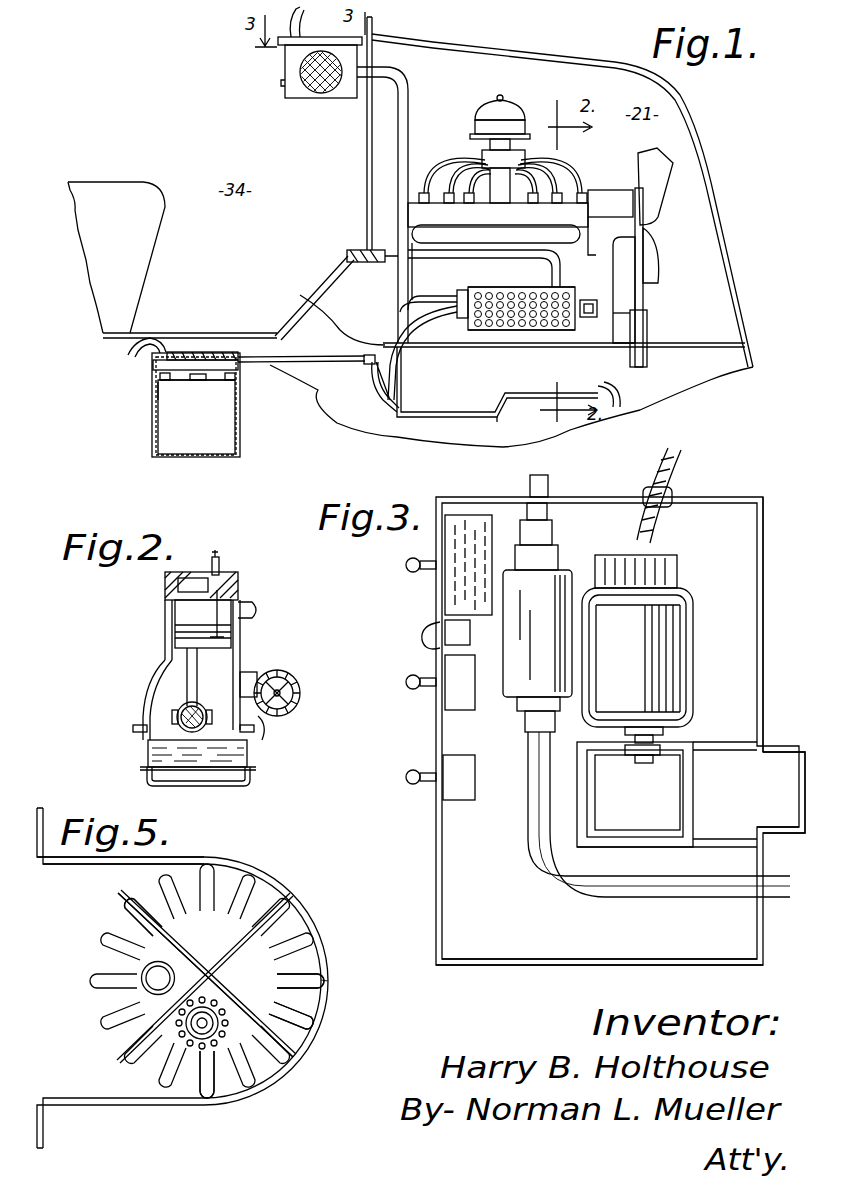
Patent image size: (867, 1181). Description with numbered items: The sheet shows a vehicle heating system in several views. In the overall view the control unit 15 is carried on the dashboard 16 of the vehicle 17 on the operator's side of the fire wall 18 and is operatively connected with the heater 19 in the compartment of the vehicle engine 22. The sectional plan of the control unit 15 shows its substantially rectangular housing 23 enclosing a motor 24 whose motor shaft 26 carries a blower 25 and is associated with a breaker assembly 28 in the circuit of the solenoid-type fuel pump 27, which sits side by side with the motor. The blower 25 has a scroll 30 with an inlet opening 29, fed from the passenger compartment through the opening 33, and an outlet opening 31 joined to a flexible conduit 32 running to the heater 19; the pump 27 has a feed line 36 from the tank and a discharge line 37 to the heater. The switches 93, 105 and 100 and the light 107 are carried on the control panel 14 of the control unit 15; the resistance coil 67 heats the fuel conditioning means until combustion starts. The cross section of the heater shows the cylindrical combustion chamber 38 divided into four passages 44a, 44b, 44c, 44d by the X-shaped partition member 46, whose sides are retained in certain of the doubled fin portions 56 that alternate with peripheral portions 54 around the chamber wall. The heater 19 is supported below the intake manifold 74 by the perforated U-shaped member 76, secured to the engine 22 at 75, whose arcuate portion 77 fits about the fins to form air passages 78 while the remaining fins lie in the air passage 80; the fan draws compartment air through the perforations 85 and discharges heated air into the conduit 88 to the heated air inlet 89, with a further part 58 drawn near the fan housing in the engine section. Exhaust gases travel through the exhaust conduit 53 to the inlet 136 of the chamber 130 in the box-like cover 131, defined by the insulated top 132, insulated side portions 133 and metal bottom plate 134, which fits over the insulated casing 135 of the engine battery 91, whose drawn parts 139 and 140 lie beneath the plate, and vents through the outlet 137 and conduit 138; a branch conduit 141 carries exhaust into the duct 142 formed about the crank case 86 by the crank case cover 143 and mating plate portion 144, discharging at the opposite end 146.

In FIG. 3, the control panel 14 is at (440, 852).
In FIG. 1, the control unit 15 is at (298, 92).
In FIG. 3, the control unit 15 is at (435, 930).
In FIG. 1, the dashboard 16 is at (301, 20).
In FIG. 1, the vehicle 17 is at (460, 38).
In FIG. 1, the fire wall 18 is at (365, 170).
In FIG. 1, the heater 19 is at (535, 332).
In FIG. 1, the vehicle engine 22 is at (598, 190).
In FIG. 2, the vehicle engine 22 is at (243, 645).
In FIG. 3, the housing 23 is at (764, 560).
In FIG. 3, the motor 24 is at (696, 665).
In FIG. 3, the blower 25 is at (685, 795).
In FIG. 3, the motor shaft 26 is at (668, 738).
In FIG. 3, the fuel pump 27 is at (508, 700).
In FIG. 3, the breaker assembly 28 is at (668, 565).
In FIG. 3, the inlet opening 29 is at (640, 848).
In FIG. 3, the scroll 30 is at (705, 848).
In FIG. 3, the outlet opening 31 is at (782, 748).
In FIG. 1, the flexible conduit 32 is at (409, 113).
In FIG. 3, the flexible conduit 32 is at (785, 835).
In FIG. 1, the opening 33 is at (321, 93).
In FIG. 3, the opening 33 is at (648, 958).
In FIG. 3, the feed line 36 is at (550, 488).
In FIG. 3, the discharge line 37 is at (553, 886).
In FIG. 5, the combustion chamber 38 is at (268, 963).
In FIG. 5, the passage 44a is at (190, 1055).
In FIG. 5, the passage 44b is at (268, 995).
In FIG. 5, the passage 44c is at (155, 934).
In FIG. 5, the passage 44d is at (132, 968).
In FIG. 5, the partition member 46 is at (242, 938).
In FIG. 1, the exhaust conduit 53 is at (425, 333).
In FIG. 5, the peripheral portions 54 is at (320, 984).
In FIG. 5, the fin portions 56 is at (322, 962).
In FIG. 2, the fan outlet 58 is at (290, 730).
In FIG. 1, the resistance coil 67 is at (588, 298).
In FIG. 1, the intake manifold 74 is at (530, 233).
In FIG. 1, the securing point 75 is at (514, 287).
In FIG. 2, the securing point 75 is at (240, 674).
In FIG. 2, the U-shaped member 76 is at (266, 672).
In FIG. 5, the U-shaped member 76 is at (190, 863).
In FIG. 2, the arcuate portion 77 is at (307, 694).
In FIG. 5, the arcuate portion 77 is at (275, 968).
In FIG. 2, the air passages 78 is at (294, 685).
In FIG. 5, the air passages 78 is at (257, 892).
In FIG. 2, the air passage 80 is at (250, 672).
In FIG. 5, the perforations 85 is at (232, 1105).
In FIG. 1, the crank case 86 is at (500, 412).
In FIG. 1, the conduit 88 is at (448, 259).
In FIG. 1, the heated air inlet 89 is at (348, 249).
In FIG. 1, the engine battery 91 is at (203, 445).
In FIG. 3, the switch 93 is at (423, 792).
In FIG. 3, the switch 100 is at (422, 690).
In FIG. 3, the switch 105 is at (420, 575).
In FIG. 3, the light 107 is at (425, 635).
In FIG. 1, the chamber 130 is at (160, 378).
In FIG. 1, the box-like cover 131 is at (145, 369).
In FIG. 1, the insulated top 132 is at (205, 352).
In FIG. 1, the insulated side portions 133 is at (248, 380).
In FIG. 1, the metal bottom plate 134 is at (200, 382).
In FIG. 1, the insulated casing 135 is at (242, 443).
In FIG. 1, the inlet 136 is at (245, 355).
In FIG. 1, the outlet 137 is at (172, 352).
In FIG. 1, the conduit 138 is at (128, 352).
In FIG. 1, the battery side 139 is at (175, 382).
In FIG. 1, the battery top 140 is at (192, 382).
In FIG. 1, the conduit 141 is at (392, 384).
In FIG. 1, the duct 142 is at (510, 390).
In FIG. 2, the duct 142 is at (160, 776).
In FIG. 2, the crank case cover 143 is at (150, 745).
In FIG. 1, the mating plate portion 144 is at (452, 420).
In FIG. 2, the mating plate portion 144 is at (208, 787).
In FIG. 1, the opposite end 146 is at (614, 389).